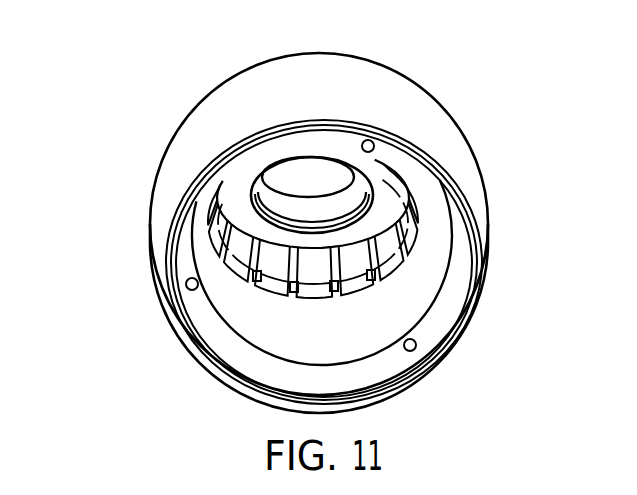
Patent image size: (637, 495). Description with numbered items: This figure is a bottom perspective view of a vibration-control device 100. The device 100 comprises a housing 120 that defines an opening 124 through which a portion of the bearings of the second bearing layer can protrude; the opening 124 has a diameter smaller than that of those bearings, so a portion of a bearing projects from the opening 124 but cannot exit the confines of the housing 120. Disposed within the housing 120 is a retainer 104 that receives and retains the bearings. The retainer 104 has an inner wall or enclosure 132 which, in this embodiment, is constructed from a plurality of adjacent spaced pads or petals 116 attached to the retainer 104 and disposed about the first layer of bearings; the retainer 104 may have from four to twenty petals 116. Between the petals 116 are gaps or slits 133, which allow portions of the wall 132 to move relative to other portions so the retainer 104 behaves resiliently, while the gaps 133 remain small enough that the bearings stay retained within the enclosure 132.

The device 100 is at (474, 80).
The housing 120 is at (372, 63).
The retainer 104 is at (193, 232).
The petals 116 is at (407, 260).
The inner wall 132 is at (426, 212).
The gaps or slits 133 is at (339, 304).
The opening 124 is at (315, 160).